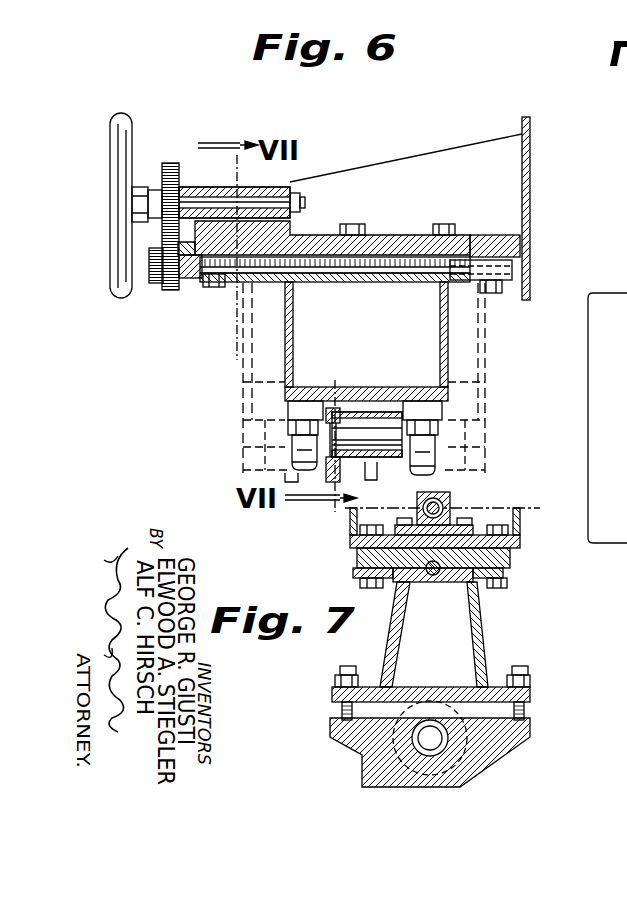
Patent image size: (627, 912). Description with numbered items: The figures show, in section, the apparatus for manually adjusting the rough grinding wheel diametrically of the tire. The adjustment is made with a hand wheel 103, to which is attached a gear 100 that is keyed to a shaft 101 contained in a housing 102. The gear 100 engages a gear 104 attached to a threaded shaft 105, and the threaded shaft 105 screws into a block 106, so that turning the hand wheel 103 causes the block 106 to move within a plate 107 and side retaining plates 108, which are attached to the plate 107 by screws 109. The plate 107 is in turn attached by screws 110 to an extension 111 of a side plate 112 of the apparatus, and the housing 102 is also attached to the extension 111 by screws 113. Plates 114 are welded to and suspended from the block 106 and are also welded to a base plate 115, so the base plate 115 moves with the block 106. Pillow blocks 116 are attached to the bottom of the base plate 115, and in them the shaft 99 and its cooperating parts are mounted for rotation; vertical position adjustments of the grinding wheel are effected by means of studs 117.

In FIG. 6, the shaft 99 is at (352, 430).
In FIG. 7, the shaft 99 is at (420, 730).
In FIG. 6, the gear 100 is at (172, 163).
In FIG. 6, the shaft 101 is at (291, 191).
In FIG. 6, the housing 102 is at (226, 186).
In FIG. 7, the housing 102 is at (450, 496).
In FIG. 6, the hand wheel 103 is at (123, 115).
In FIG. 6, the gear 104 is at (168, 290).
In FIG. 6, the threaded shaft 105 is at (240, 282).
In FIG. 7, the threaded shaft 105 is at (436, 576).
In FIG. 6, the block 106 is at (370, 284).
In FIG. 7, the block 106 is at (465, 578).
In FIG. 6, the plate 107 is at (515, 256).
In FIG. 7, the plate 107 is at (510, 557).
In FIG. 6, the side retaining plates 108 is at (505, 273).
In FIG. 7, the side retaining plates 108 is at (507, 580).
In FIG. 6, the screws 109 is at (495, 293).
In FIG. 7, the screws 109 is at (500, 590).
In FIG. 6, the screws 110 is at (437, 224).
In FIG. 7, the screws 110 is at (505, 526).
In FIG. 6, the extension 111 is at (313, 236).
In FIG. 7, the extension 111 is at (522, 541).
In FIG. 6, the side plate 112 is at (529, 158).
In FIG. 7, the screws 113 is at (462, 518).
In FIG. 7, the plates 114 is at (398, 620).
In FIG. 6, the base plate 115 is at (308, 387).
In FIG. 7, the base plate 115 is at (437, 695).
In FIG. 6, the pillow blocks 116 is at (420, 418).
In FIG. 7, the studs 117 is at (340, 672).